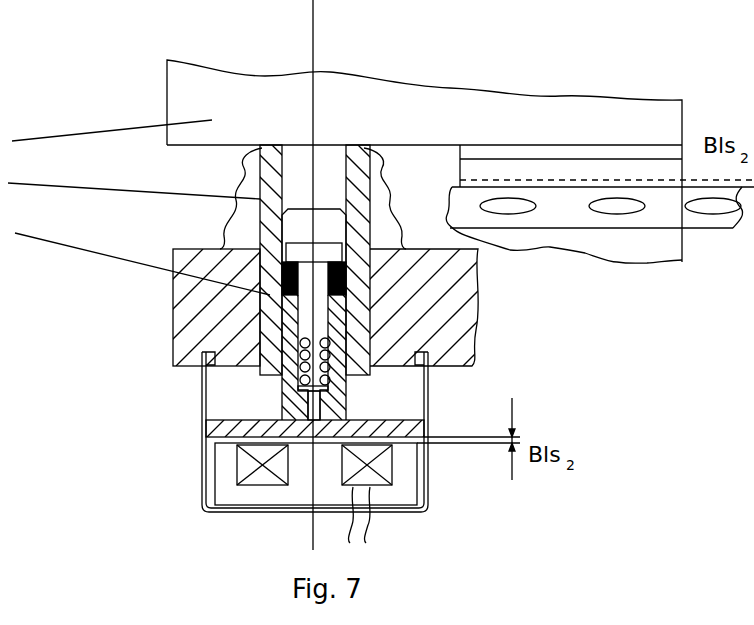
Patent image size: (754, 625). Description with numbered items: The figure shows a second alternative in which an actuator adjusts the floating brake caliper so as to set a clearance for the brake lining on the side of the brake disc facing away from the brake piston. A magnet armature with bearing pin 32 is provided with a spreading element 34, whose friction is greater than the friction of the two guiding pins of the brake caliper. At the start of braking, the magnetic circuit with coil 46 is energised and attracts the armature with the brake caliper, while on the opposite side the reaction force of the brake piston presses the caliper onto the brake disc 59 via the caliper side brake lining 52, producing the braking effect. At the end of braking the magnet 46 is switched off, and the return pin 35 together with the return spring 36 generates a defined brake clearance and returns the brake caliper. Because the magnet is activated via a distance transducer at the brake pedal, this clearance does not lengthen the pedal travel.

The magnet armature with bearing pin 32 is at (345, 402).
The spreading element 34 is at (347, 283).
The return pin 35 is at (307, 405).
The return spring 36 is at (305, 378).
The magnetic circuit with coil 46 is at (402, 485).
The caliper side brake lining 52 is at (622, 169).
The brake disc 59 is at (713, 220).